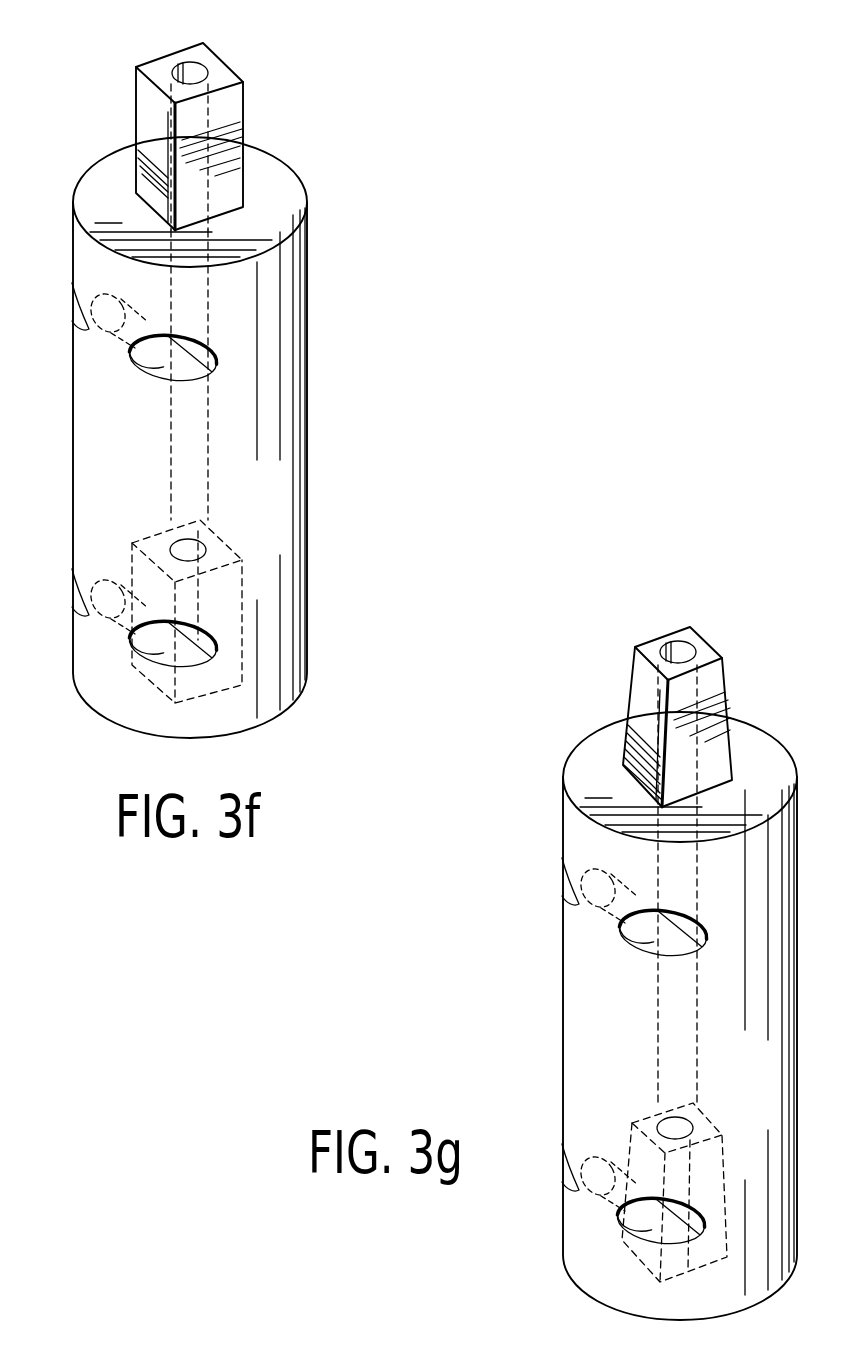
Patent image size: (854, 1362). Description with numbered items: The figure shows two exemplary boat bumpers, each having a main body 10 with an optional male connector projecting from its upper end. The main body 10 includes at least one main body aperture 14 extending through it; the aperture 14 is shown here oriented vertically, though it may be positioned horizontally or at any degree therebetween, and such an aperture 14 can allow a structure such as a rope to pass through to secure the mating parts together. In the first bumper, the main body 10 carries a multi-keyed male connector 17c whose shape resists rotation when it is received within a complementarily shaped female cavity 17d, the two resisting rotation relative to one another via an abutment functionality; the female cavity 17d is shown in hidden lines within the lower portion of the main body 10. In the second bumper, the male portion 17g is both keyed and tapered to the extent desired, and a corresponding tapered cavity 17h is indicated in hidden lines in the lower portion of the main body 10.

In FIG. 3f, the main body 10 is at (324, 91).
In FIG. 3g, the main body 10 is at (574, 647).
In FIG. 3f, the main body aperture 14 is at (187, 64).
In FIG. 3g, the main body aperture 14 is at (676, 644).
In FIG. 3f, the male connector 17c is at (244, 79).
In FIG. 3f, the female cavity 17d is at (238, 540).
In FIG. 3g, the male portion 17g is at (723, 656).
In FIG. 3g, the tapered insert block (hidden position) 17h is at (722, 1134).